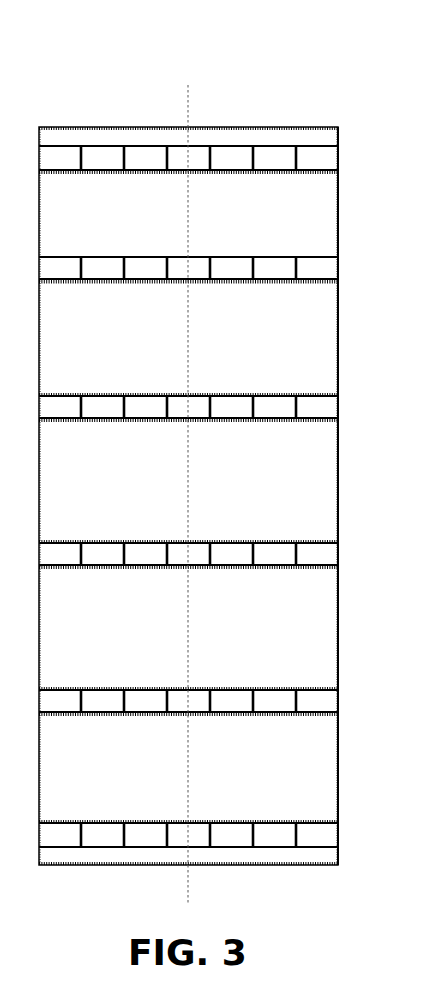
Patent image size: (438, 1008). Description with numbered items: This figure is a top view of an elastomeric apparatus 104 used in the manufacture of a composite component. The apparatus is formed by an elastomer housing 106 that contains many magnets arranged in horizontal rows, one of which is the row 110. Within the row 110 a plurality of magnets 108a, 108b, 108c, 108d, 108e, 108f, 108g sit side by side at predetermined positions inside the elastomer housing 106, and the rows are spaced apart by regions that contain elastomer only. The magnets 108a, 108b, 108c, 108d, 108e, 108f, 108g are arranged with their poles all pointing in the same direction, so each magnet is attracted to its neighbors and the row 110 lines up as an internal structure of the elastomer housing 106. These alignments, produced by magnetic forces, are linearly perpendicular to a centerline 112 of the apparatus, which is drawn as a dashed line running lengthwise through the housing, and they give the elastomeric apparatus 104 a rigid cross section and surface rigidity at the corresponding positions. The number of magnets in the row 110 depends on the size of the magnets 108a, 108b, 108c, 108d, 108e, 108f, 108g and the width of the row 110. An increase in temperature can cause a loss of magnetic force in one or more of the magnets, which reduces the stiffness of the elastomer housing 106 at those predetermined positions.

The elastomeric apparatus 104 is at (222, 462).
The elastomer housing 106 is at (335, 214).
The magnet 108a is at (52, 421).
The magnet 108b is at (95, 421).
The magnet 108c is at (137, 421).
The magnet 108d is at (182, 421).
The magnet 108e is at (225, 421).
The magnet 108f is at (267, 421).
The magnet 108g is at (307, 421).
The row 110 is at (222, 436).
The centerline 112 is at (190, 101).